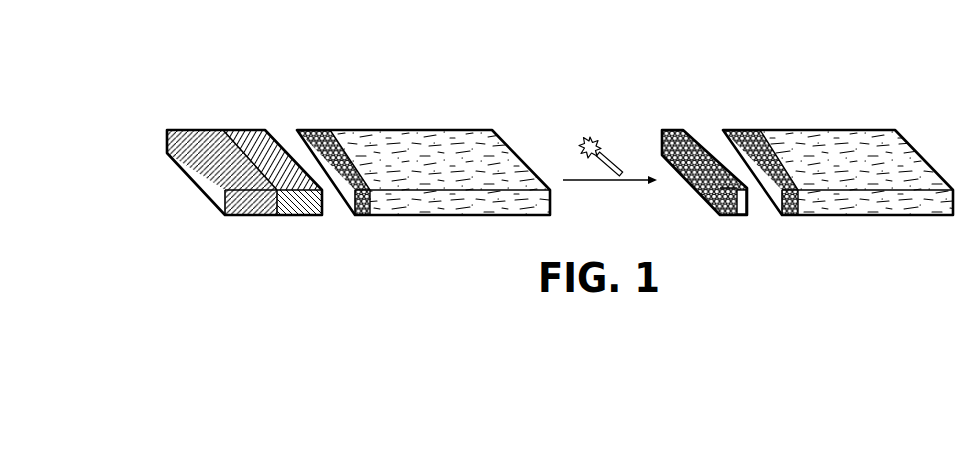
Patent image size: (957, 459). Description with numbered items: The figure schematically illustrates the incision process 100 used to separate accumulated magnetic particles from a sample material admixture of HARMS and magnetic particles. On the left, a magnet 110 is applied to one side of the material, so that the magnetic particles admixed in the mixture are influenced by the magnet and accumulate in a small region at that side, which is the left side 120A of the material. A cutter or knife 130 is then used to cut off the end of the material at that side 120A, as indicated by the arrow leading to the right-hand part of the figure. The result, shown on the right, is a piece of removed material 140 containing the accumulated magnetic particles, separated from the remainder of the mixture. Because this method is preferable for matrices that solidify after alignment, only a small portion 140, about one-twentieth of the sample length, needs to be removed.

The incision process 100 is at (358, 170).
The magnet 110 is at (253, 217).
The one side of the material 120A is at (310, 128).
The cutter or knife 130 is at (592, 133).
The piece of removed material 140 is at (738, 215).